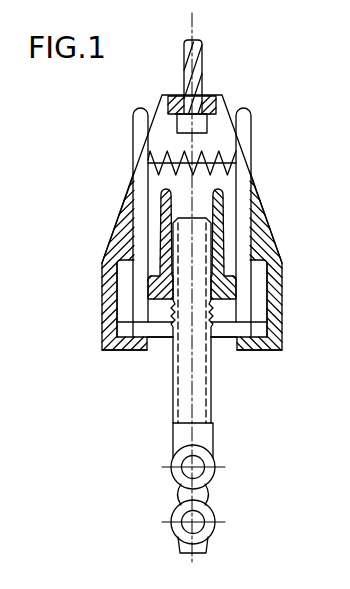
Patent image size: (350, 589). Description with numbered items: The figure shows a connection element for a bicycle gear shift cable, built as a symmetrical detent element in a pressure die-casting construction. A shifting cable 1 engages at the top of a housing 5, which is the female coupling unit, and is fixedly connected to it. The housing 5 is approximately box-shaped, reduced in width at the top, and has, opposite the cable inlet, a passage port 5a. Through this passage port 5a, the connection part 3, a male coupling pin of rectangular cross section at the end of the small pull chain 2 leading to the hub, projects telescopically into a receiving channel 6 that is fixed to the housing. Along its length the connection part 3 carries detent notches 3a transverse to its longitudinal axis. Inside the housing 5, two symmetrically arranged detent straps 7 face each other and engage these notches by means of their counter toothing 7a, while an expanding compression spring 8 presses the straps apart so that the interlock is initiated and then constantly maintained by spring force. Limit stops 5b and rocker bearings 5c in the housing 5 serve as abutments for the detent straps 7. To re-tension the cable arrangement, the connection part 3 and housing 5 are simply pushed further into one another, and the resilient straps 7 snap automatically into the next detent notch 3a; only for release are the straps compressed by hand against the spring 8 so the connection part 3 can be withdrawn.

The shifting cable 1 is at (200, 53).
The small pull chain 2 is at (203, 495).
The connection part 3 is at (198, 397).
The detent notches 3a is at (213, 363).
The housing 5 is at (218, 128).
The passage port 5a is at (160, 342).
The limit stops 5b is at (127, 242).
The rocker bearings 5c is at (148, 287).
The receiving channel 6 is at (208, 200).
The detent straps 7 is at (128, 195).
The counter toothing 7a is at (130, 323).
The compression spring 8 is at (213, 148).